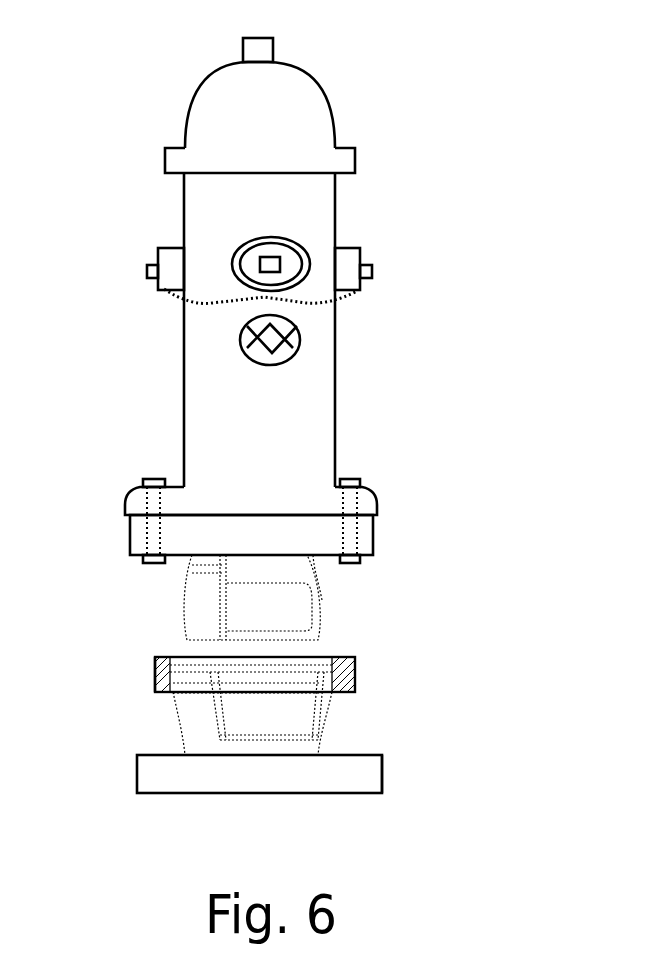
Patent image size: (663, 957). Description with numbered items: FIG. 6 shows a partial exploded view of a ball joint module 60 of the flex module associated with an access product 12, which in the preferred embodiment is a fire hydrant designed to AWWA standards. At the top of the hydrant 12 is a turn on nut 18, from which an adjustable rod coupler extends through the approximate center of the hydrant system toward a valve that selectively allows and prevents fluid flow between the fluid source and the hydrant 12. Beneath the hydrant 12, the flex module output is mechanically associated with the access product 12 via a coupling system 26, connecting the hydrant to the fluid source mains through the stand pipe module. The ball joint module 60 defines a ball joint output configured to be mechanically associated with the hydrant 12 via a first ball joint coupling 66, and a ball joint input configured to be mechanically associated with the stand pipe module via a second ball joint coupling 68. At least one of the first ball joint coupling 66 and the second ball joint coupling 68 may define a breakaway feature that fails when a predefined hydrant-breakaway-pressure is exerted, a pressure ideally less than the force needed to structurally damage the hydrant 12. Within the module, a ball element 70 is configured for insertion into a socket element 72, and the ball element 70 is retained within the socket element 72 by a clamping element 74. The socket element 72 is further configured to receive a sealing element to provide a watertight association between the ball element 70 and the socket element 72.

The access product 12 is at (278, 418).
The turn on nut 18 is at (253, 50).
The coupling system 26 is at (130, 495).
The ball joint module 60 is at (399, 661).
The first ball joint coupling 66 is at (143, 533).
The second ball joint coupling 68 is at (137, 775).
The ball element 70 is at (185, 607).
The socket element 72 is at (187, 712).
The clamping element 74 is at (348, 657).